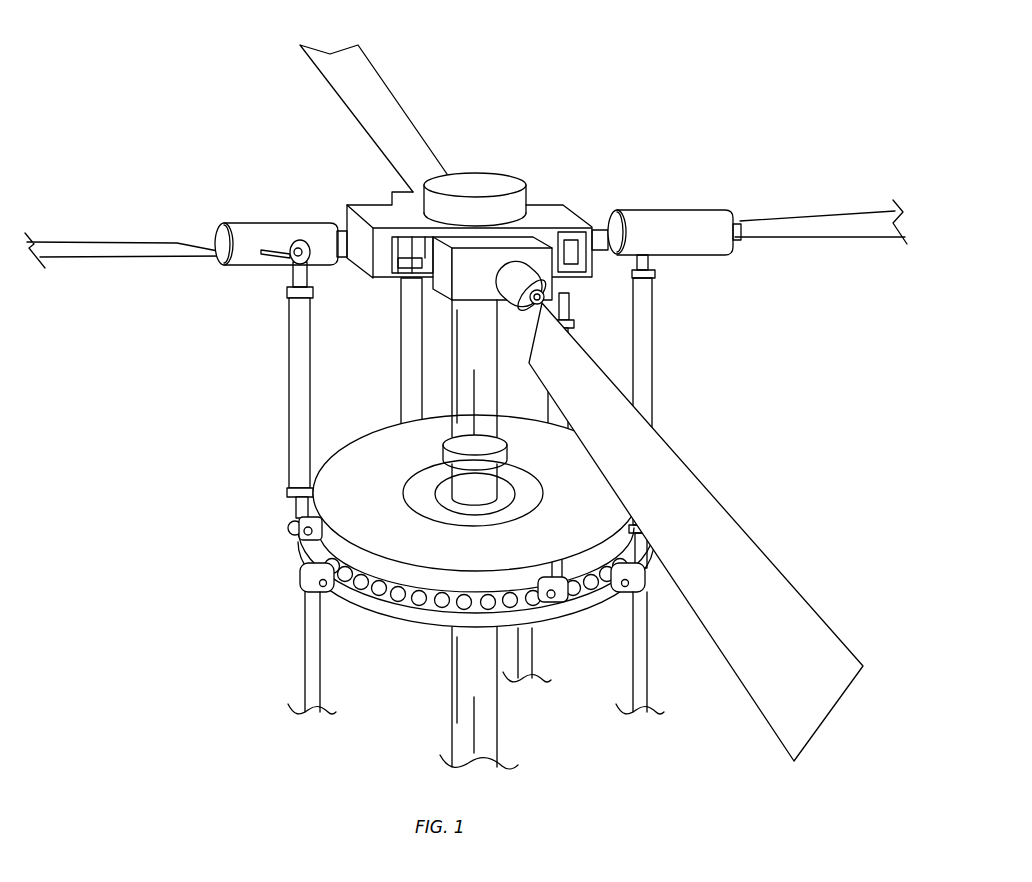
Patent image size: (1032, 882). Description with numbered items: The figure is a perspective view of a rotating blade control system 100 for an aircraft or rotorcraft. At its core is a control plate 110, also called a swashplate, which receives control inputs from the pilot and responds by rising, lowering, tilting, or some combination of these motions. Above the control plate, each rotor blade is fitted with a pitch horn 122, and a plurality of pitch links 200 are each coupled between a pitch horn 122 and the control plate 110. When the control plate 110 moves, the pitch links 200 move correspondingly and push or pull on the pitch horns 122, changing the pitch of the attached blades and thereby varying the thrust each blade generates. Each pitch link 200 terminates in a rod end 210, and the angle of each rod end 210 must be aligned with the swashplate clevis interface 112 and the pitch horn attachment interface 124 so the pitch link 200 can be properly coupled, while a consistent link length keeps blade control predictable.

The rotating blade control system 100 is at (158, 509).
The control plate 110 is at (311, 549).
The swashplate clevis interface 112 is at (304, 539).
The pitch horn 122 is at (294, 242).
The pitch horn attachment interface 124 is at (290, 265).
The pitch link 200 is at (292, 387).
The rod end 210 is at (313, 263).